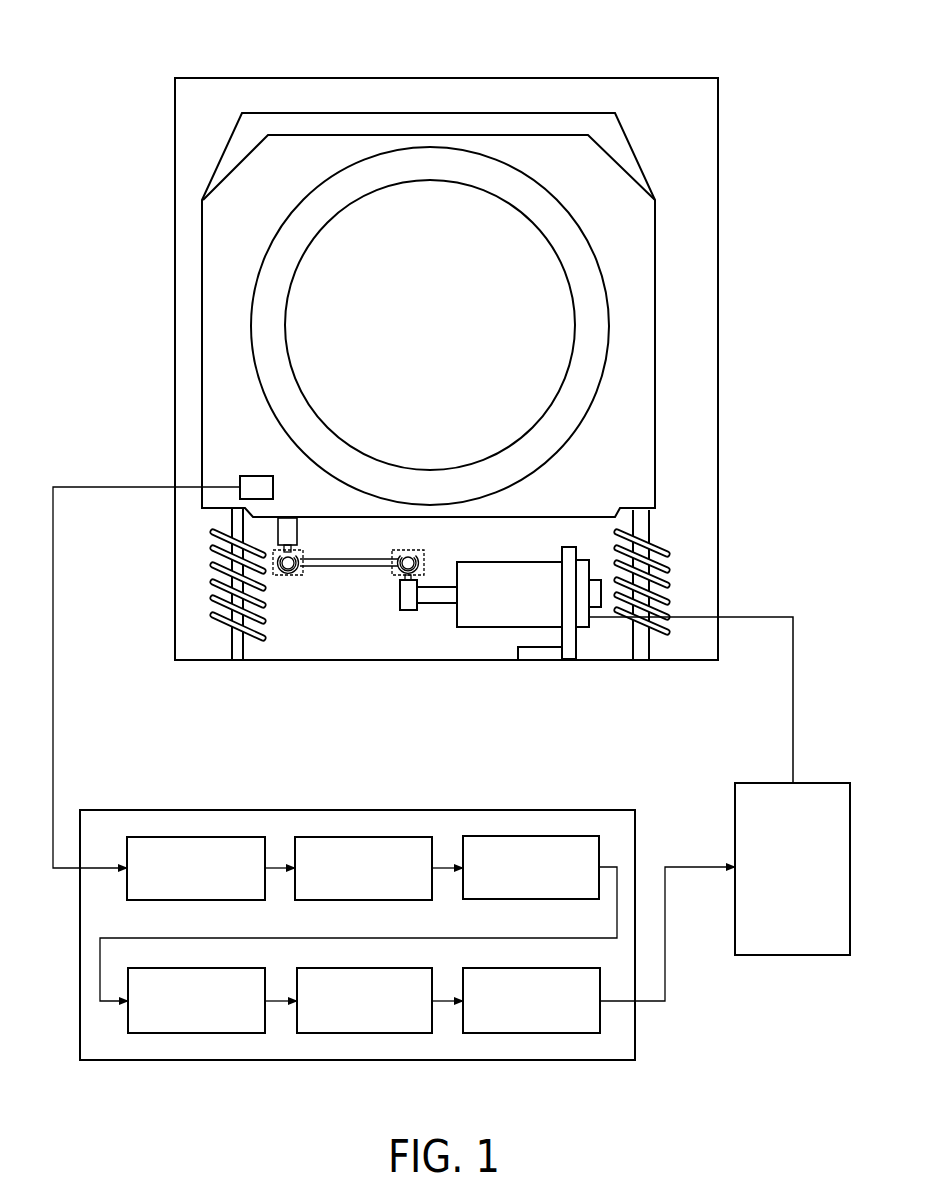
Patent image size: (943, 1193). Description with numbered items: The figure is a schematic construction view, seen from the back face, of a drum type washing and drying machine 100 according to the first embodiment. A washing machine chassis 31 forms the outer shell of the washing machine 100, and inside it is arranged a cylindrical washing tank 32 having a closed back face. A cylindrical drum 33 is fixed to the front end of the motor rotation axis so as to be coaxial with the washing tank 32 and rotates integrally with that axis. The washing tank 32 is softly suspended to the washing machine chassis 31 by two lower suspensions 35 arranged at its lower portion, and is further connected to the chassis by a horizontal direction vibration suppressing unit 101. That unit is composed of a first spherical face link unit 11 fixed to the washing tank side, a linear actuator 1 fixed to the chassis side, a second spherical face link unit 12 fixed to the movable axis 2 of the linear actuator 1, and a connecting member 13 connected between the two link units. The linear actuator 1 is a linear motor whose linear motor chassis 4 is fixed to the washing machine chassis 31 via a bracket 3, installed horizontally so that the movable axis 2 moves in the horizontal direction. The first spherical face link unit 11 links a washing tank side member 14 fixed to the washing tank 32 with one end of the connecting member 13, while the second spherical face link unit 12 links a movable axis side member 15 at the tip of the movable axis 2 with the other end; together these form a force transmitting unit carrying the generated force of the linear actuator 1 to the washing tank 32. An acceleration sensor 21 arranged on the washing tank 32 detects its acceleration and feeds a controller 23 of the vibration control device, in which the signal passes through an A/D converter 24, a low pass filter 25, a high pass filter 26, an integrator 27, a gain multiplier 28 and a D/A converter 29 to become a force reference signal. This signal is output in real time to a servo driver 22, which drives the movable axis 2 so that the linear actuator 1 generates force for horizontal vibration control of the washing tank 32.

The drum type washing and drying machine 100 is at (115, 183).
The horizontal direction vibration suppressing unit 101 is at (363, 642).
The linear actuator 1 is at (583, 628).
The movable axis 2 is at (440, 603).
The bracket 3 is at (543, 653).
The linear motor chassis 4 is at (497, 627).
The first spherical face link unit 11 is at (288, 577).
The second spherical face link unit 12 is at (400, 575).
The connecting member 13 is at (332, 566).
The washing tank side member 14 is at (278, 528).
The movable axis side member 15 is at (410, 610).
The acceleration sensor 21 is at (240, 479).
The servo driver 22 is at (822, 783).
The controller of the vibration control device 23 is at (122, 810).
The A/D converter 24 is at (190, 837).
The low pass filter 25 is at (390, 837).
The high pass filter 26 is at (556, 836).
The integrator 27 is at (203, 1033).
The gain multiplier 28 is at (372, 1033).
The D/A converter 29 is at (543, 1033).
The washing machine chassis 31 is at (303, 78).
The washing tank 32 is at (503, 113).
The drum 33 is at (428, 167).
The lower suspensions 35 is at (213, 605).